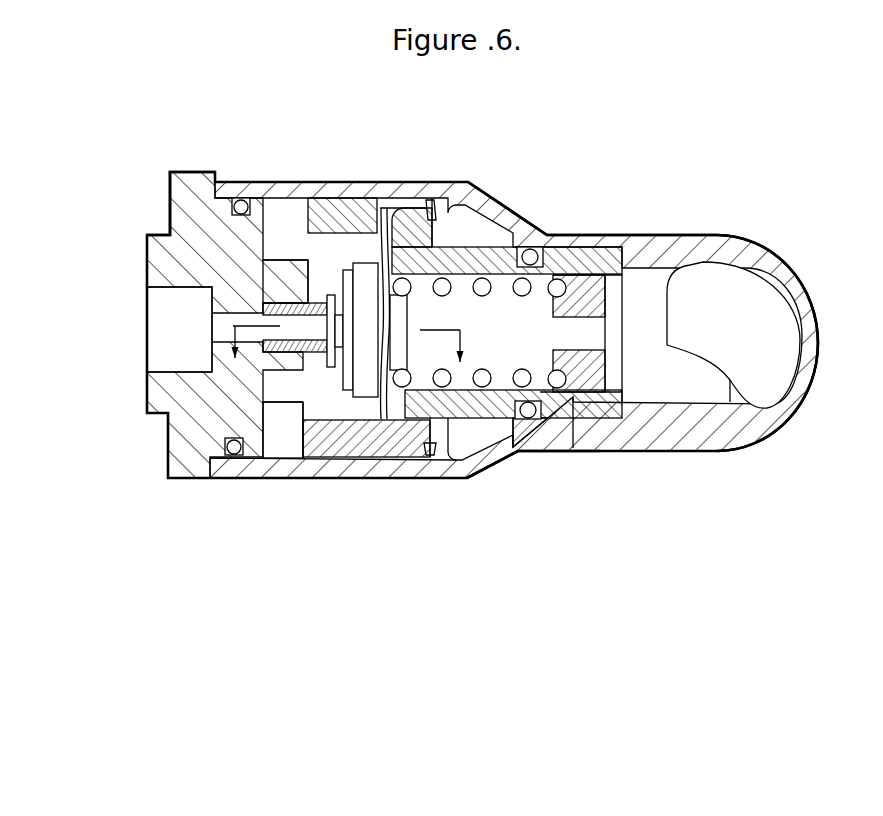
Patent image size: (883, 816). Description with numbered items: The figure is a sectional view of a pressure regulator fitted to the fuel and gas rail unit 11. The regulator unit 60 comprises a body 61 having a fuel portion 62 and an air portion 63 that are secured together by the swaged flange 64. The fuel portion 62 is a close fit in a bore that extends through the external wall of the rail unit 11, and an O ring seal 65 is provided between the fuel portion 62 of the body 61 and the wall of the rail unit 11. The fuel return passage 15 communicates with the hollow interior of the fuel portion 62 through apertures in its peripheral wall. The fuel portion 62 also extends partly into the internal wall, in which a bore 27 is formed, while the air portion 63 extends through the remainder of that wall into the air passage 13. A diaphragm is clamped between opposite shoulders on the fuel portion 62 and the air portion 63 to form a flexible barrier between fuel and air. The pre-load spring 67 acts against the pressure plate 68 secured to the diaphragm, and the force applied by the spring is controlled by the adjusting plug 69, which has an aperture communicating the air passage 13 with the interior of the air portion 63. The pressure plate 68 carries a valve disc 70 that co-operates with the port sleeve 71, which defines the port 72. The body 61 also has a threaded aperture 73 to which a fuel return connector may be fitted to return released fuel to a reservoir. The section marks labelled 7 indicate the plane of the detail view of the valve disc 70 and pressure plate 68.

The rail unit 11 is at (486, 174).
The regulator unit 60 is at (155, 208).
The body 61 is at (177, 443).
The O ring seal 65 is at (235, 452).
The threaded aperture 73 is at (172, 340).
The port sleeve 71 is at (284, 298).
The port 72 is at (295, 327).
The section line 7- 7 is at (347, 339).
The valve disc 70 is at (331, 292).
The pressure plate 68 is at (350, 410).
The fuel portion 62 is at (340, 464).
The fuel return passage 15 is at (322, 405).
The air portion 63 is at (574, 398).
The pre-load spring 67 is at (520, 370).
The bore 27 is at (622, 231).
The adjusting plug 69 is at (659, 262).
The air passage 13 is at (745, 306).
The swaged flange 64 is at (430, 483).